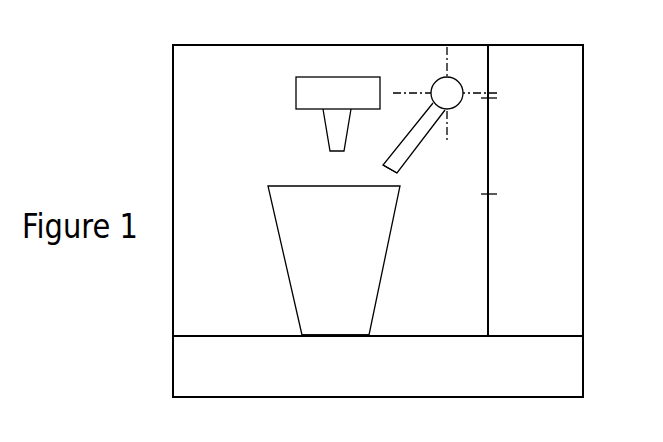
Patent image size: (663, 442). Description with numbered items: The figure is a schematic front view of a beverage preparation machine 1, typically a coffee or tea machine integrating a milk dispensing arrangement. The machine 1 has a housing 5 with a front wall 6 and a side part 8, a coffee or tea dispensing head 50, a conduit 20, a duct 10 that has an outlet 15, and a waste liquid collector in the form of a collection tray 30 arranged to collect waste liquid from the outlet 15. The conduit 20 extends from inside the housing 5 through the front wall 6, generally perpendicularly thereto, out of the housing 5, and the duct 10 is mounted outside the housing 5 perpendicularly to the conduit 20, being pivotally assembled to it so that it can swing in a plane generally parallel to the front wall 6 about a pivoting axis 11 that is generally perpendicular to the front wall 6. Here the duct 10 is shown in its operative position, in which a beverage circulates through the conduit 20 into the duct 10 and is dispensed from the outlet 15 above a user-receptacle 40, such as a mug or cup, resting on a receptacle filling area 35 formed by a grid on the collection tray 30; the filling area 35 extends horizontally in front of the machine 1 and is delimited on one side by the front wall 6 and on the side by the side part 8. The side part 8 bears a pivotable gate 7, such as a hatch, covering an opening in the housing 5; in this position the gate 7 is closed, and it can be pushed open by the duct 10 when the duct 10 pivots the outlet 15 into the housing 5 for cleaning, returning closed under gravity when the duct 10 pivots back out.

The beverage preparation machine 1 is at (135, 68).
The housing 5 is at (470, 45).
The front wall 6 is at (330, 190).
The pivotable gate 7 is at (492, 177).
The side part 8 is at (535, 190).
The duct 10 is at (408, 143).
The pivoting axis 11 is at (447, 92).
The outlet 15 is at (383, 166).
The conduit 20 is at (452, 100).
The collection tray 30 is at (568, 355).
The receptacle filling area 35 is at (333, 337).
The user-receptacle 40 is at (334, 260).
The dispensing head 50 is at (293, 123).